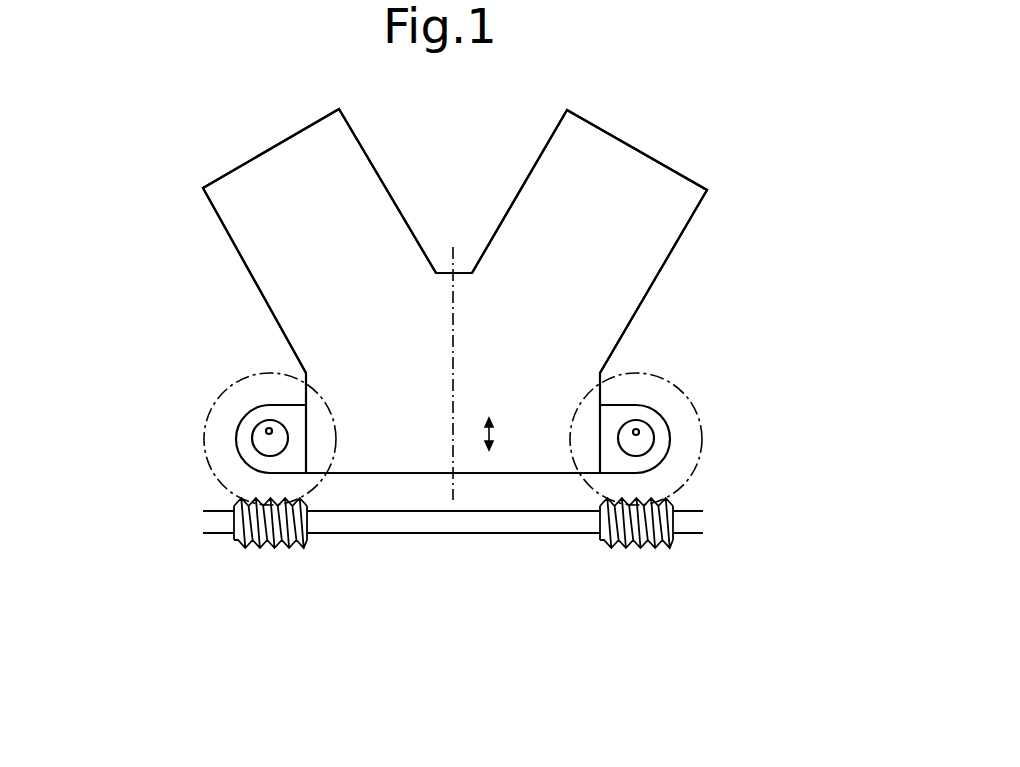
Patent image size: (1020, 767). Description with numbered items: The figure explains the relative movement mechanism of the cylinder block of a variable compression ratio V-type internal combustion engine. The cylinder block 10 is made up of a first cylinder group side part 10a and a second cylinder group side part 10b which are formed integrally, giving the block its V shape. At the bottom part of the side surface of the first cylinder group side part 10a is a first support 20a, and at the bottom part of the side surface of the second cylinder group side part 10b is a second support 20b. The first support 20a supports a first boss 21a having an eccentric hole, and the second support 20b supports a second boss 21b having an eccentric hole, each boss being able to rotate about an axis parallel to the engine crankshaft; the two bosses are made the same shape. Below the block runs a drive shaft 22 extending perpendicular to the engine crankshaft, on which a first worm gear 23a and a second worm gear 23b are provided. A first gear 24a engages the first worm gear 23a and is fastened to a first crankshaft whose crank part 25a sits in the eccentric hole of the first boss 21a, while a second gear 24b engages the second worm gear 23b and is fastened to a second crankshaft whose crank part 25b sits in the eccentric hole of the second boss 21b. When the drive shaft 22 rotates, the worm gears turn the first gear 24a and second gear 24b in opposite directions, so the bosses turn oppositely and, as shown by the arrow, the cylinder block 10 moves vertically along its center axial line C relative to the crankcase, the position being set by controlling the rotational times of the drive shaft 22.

The cylinder block 10 is at (452, 208).
The first cylinder group side part 10a is at (287, 180).
The second cylinder group side part 10b is at (627, 187).
The first support 20a is at (268, 405).
The second support 20b is at (630, 413).
The first boss 21a is at (253, 440).
The second boss 21b is at (651, 443).
The drive shaft 22 is at (553, 523).
The first worm gear 23a is at (270, 540).
The second worm gear 23b is at (653, 538).
The first gear 24a is at (212, 470).
The second gear 24b is at (694, 470).
The crank part of the first crankshaft 25a is at (266, 424).
The crank part of the second crankshaft 25b is at (641, 427).
The center axial line C is at (453, 487).